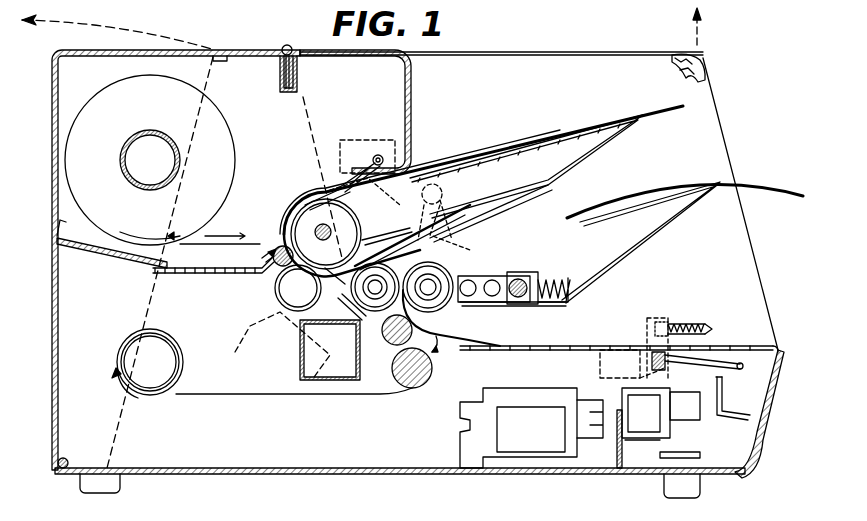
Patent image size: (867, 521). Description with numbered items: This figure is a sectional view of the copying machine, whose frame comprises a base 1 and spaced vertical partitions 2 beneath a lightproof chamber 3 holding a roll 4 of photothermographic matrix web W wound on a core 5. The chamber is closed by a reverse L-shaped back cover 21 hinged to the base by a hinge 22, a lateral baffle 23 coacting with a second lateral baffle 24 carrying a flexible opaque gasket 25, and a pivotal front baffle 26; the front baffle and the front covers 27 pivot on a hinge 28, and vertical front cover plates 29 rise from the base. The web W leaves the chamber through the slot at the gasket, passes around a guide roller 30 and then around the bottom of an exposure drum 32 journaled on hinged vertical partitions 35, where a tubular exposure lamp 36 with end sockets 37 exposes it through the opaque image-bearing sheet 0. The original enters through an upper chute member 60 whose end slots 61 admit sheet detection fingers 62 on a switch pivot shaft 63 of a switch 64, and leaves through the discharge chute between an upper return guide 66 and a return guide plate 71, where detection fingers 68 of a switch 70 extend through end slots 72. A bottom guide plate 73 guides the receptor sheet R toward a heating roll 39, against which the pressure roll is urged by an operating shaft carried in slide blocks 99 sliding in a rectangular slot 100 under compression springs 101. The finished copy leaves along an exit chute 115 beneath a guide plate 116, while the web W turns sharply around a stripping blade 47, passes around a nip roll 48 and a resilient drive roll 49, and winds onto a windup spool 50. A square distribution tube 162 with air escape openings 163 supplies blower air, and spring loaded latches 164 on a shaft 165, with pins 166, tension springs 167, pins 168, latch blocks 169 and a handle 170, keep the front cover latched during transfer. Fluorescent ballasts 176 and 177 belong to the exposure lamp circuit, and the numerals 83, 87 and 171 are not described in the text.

The base 1 is at (336, 468).
The vertical partition 2 is at (212, 429).
The lightproof chamber 3 is at (252, 104).
The roll 4 is at (232, 163).
The core 5 is at (124, 162).
The back cover 21 is at (88, 57).
The hinge 22 is at (66, 462).
The lateral baffle 23 is at (140, 268).
The lateral baffle 24 is at (226, 278).
The flexible opaque gasket 25 is at (262, 258).
The front baffle 26 is at (407, 92).
The front cover 27 is at (690, 74).
The hinge 28 is at (284, 48).
The vertical front cover plate 29 is at (760, 422).
The guide roller 30 is at (280, 248).
The exposure drum 32 is at (326, 234).
The hinged vertical partition 35 is at (367, 97).
The tubular exposure lamp 36 is at (284, 322).
The end socket 37 is at (262, 306).
The heating roll 39 is at (358, 305).
The stripping blade 47 is at (390, 335).
The nip roll 48 is at (428, 322).
The drive roll 49 is at (420, 390).
The windup spool 50 is at (156, 396).
The upper chute member 60 is at (610, 132).
The end slot 61 is at (322, 176).
The sheet detection finger 62 is at (342, 182).
The switch pivot shaft 63 is at (378, 154).
The switch 64 is at (338, 148).
The upper return guide 66 is at (538, 176).
The detection finger 68 is at (387, 227).
The switch 70 is at (370, 222).
The return guide plate 71 is at (506, 208).
The end slot 72 is at (443, 224).
The bottom guide plate 73 is at (522, 206).
The roller 83 is at (432, 314).
The pivot 87 is at (436, 190).
The slide block 99 is at (524, 274).
The rectangular slot 100 is at (560, 278).
The compression spring 101 is at (582, 284).
The exit chute 115 is at (492, 336).
The guide plate 116 is at (532, 316).
The distribution tube 162 is at (338, 372).
The air escape opening 163 is at (340, 328).
The spring loaded latch 164 is at (644, 328).
The shaft 165 is at (664, 362).
The pin 166 is at (654, 320).
The tension spring 167 is at (683, 322).
The pin 168 is at (712, 326).
The latch block 169 is at (600, 370).
The handle 170 is at (740, 372).
The fixture 171 is at (648, 440).
The fluorescent ballast 176 is at (540, 426).
The fluorescent ballast 177 is at (540, 451).
The matrix web W is at (210, 247).
The image-bearing sheet 0 is at (572, 116).
The receptor sheet R is at (664, 192).